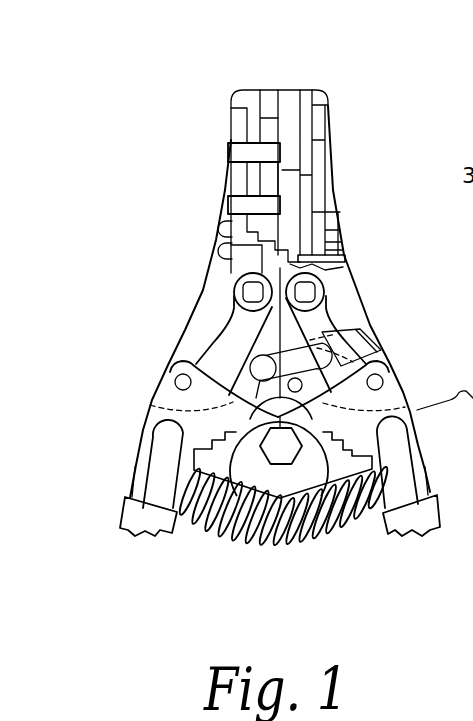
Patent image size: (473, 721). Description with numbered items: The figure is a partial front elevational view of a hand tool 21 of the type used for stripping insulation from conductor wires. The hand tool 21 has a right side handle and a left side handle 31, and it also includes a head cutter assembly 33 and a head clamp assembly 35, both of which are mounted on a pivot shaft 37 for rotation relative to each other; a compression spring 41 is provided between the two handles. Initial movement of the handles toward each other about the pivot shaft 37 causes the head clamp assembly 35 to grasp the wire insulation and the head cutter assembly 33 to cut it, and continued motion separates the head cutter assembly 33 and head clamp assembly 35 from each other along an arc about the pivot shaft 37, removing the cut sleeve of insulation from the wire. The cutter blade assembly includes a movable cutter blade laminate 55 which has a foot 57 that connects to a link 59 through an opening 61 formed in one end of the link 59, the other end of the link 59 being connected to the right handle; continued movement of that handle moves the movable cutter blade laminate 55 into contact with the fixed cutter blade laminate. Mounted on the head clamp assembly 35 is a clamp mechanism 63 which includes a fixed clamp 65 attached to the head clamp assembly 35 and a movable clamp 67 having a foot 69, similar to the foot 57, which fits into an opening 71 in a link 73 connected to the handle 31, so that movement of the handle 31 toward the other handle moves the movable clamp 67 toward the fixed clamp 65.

The hand tool 21 is at (218, 172).
The handle 31 is at (146, 428).
The head cutter assembly 33 is at (338, 157).
The head clamp assembly 35 is at (213, 212).
The pivot shaft 37 is at (281, 452).
The compression spring 41 is at (220, 527).
The movable cutter blade laminate 55 is at (307, 125).
The foot 57 is at (325, 280).
The link 59 is at (313, 318).
The opening 61 is at (315, 292).
The clamp mechanism 63 is at (217, 187).
The fixed clamp 65 is at (220, 223).
The movable clamp 67 is at (238, 155).
The foot 69 is at (246, 299).
The opening 71 is at (232, 305).
The link 73 is at (233, 348).